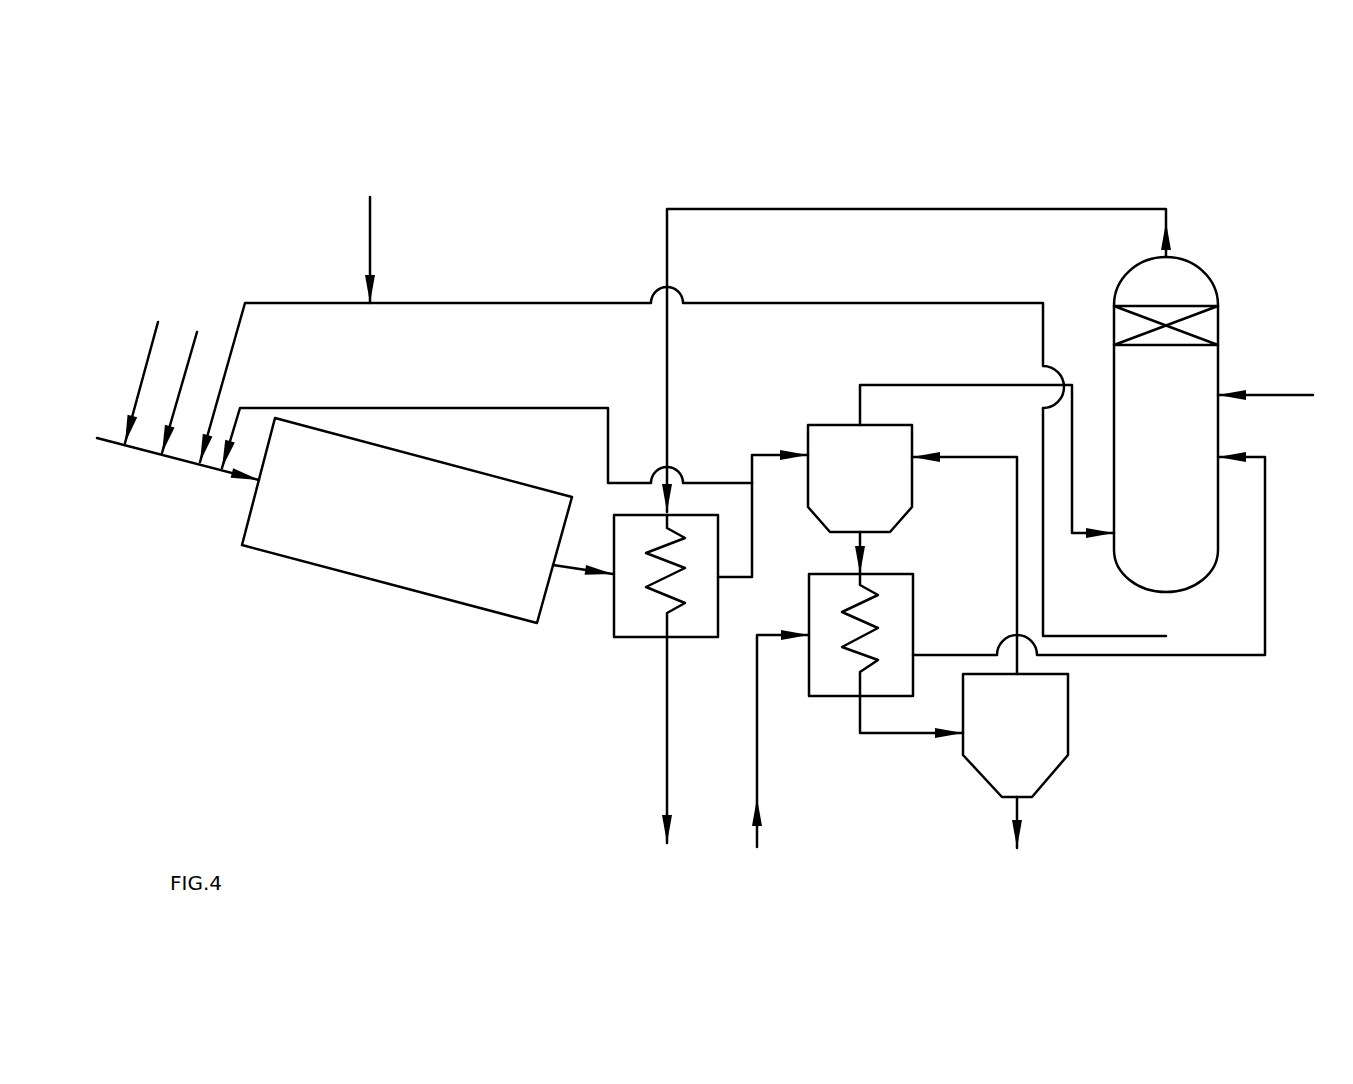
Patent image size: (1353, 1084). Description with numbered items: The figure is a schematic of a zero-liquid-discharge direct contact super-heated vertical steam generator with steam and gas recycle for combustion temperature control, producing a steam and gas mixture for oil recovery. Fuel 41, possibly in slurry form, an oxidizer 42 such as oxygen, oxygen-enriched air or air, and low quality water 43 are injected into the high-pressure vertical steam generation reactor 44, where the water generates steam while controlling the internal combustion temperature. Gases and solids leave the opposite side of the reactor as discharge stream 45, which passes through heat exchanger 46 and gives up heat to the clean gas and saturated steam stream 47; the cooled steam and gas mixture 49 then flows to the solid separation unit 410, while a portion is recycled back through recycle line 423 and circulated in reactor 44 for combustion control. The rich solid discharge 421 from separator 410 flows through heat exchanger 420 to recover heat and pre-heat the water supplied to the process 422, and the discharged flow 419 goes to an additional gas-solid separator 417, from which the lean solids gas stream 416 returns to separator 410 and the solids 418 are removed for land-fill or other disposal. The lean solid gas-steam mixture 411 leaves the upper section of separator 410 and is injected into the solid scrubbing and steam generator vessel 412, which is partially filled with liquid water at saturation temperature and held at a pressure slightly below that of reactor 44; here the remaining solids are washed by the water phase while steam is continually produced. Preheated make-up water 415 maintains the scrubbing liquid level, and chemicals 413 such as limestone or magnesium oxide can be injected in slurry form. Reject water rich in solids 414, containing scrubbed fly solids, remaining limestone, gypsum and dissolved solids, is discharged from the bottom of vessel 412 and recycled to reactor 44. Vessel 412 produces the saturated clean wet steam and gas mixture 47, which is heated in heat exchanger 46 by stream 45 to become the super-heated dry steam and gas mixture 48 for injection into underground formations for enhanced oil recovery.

The fuel 41 is at (178, 388).
The oxidizer 42 is at (185, 373).
The water 43 is at (368, 234).
The steam generation reactor 44 is at (318, 543).
The gas and solids discharge 45 is at (570, 567).
The heat exchanger 46 is at (633, 622).
The clean gas and saturated steam stream 47 is at (665, 408).
The super-heated dry steam and gas mixture 48 is at (665, 760).
The steam and gas mixture 49 is at (765, 455).
The solid separation unit 410 is at (840, 443).
The lean solid gas-steam mixture 411 is at (967, 385).
The solid scrubbing and steam generator vessel 412 is at (1203, 523).
The chemicals 413 is at (1265, 383).
The reject water rich in solids 414 is at (955, 303).
The make-up water 415 is at (1100, 655).
The lean solids gas stream 416 is at (1017, 525).
The gas-solid separator 417 is at (1043, 757).
The solids 418 is at (1020, 812).
The discharged flow 419 is at (907, 735).
The heat exchanger 420 is at (845, 673).
The rich solid discharge 421 is at (862, 562).
The water supplied to process 422 is at (757, 715).
The recycle line 423 is at (407, 374).